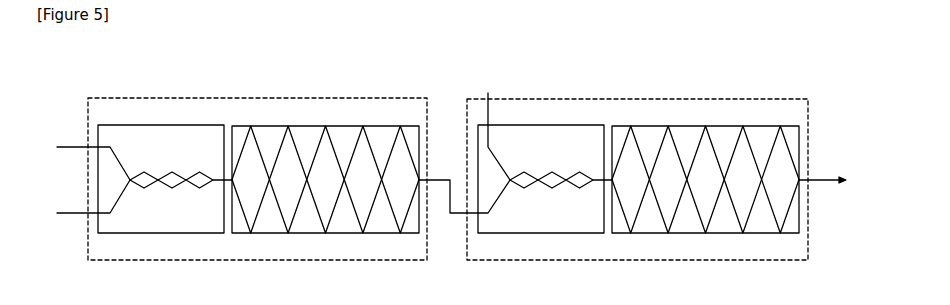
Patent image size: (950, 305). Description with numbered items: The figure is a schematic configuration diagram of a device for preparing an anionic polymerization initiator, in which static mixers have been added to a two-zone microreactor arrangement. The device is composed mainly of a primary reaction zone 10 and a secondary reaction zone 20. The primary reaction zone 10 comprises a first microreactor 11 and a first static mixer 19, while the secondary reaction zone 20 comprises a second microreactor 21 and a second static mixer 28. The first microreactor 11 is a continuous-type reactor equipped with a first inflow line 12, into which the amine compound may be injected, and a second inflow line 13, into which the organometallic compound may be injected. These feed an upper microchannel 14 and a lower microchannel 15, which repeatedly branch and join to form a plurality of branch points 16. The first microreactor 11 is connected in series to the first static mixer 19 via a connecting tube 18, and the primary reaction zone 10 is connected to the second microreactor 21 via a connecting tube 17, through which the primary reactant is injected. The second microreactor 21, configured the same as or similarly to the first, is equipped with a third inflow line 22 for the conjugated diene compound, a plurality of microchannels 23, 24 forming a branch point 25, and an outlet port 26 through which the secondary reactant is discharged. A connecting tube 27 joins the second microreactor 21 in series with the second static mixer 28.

The primary reaction zone 10 is at (256, 98).
The first microreactor 11 is at (155, 125).
The first inflow line 12 is at (78, 147).
The second inflow line 13 is at (75, 213).
The upper microchannel 14 is at (148, 171).
The lower microchannel 15 is at (147, 188).
The branch point 16 is at (159, 186).
The connecting tube 17 is at (441, 178).
The connecting tube 18 is at (226, 178).
The first static mixer 19 is at (342, 126).
The secondary reaction zone 20 is at (632, 99).
The second microreactor 21 is at (545, 125).
The third inflow line 22 is at (488, 113).
The microchannel 23 is at (527, 171).
The microchannel 24 is at (527, 188).
The branch point 25 is at (540, 186).
The outlet port 26 is at (820, 180).
The connecting tube 27 is at (606, 178).
The second static mixer 28 is at (718, 126).